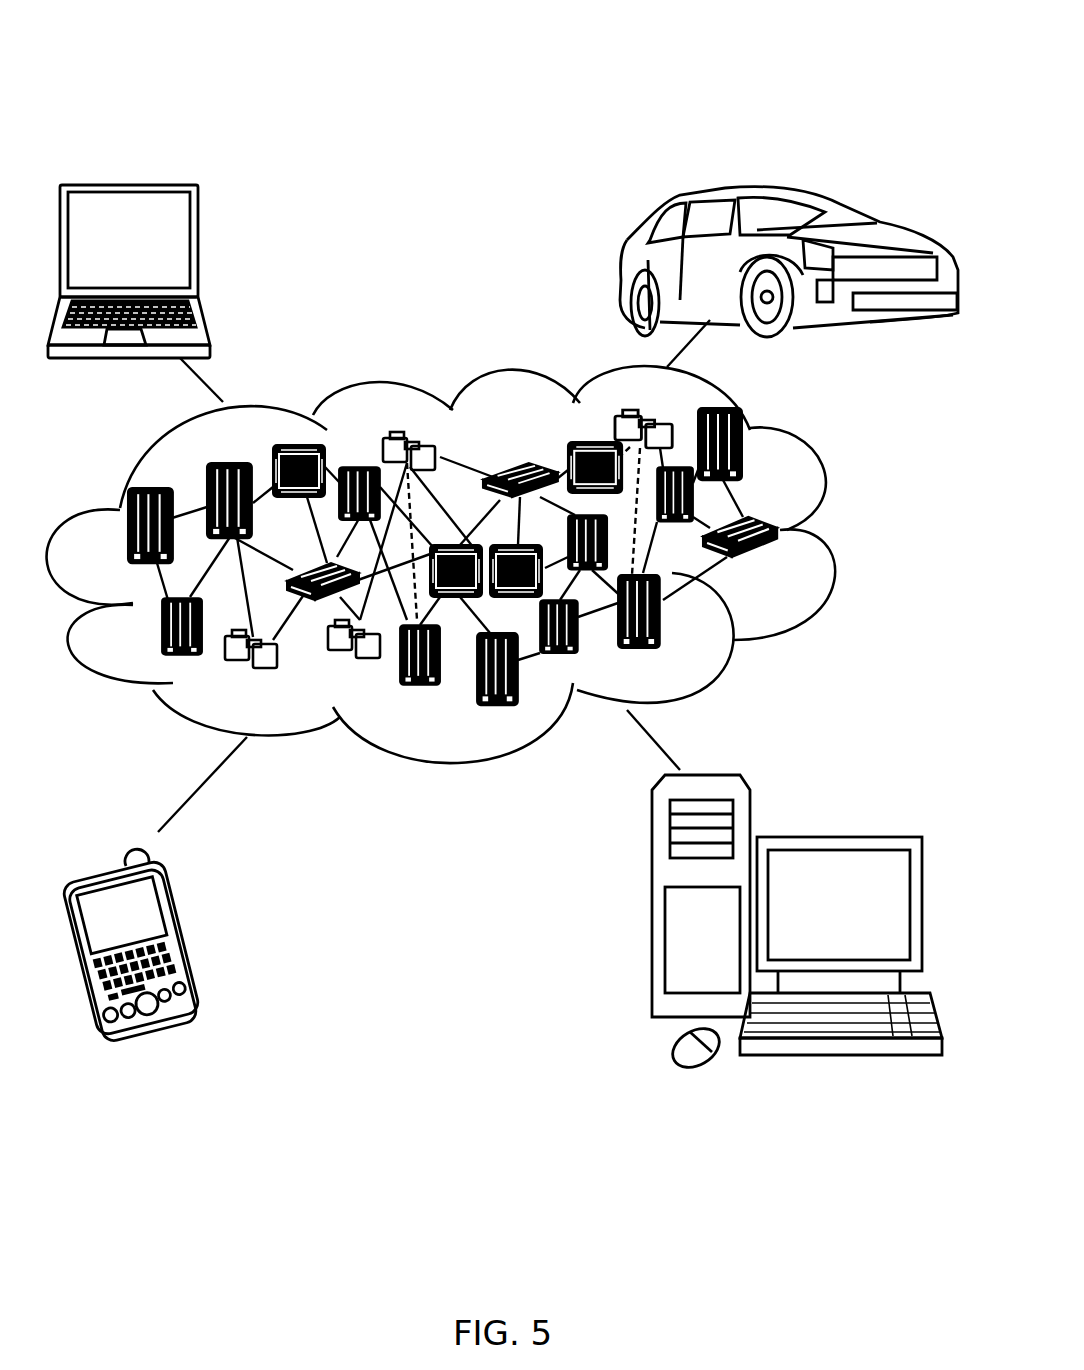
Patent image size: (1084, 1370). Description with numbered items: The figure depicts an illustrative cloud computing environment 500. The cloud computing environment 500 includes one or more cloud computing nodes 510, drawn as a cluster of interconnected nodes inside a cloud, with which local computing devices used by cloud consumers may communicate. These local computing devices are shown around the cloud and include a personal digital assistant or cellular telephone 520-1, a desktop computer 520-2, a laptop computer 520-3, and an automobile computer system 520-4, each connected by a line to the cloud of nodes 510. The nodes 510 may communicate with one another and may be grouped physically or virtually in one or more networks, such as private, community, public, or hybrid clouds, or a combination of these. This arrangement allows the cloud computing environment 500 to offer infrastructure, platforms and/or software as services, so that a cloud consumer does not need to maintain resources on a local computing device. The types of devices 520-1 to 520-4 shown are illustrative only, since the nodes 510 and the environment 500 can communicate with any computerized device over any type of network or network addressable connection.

The cloud computing environment 500 is at (780, 42).
The cloud computing nodes 510 is at (788, 570).
The personal digital assistant or cellular telephone 520-1 is at (188, 938).
The desktop computer 520-2 is at (850, 815).
The laptop computer 520-3 is at (198, 250).
The automobile computer system 520-4 is at (620, 265).